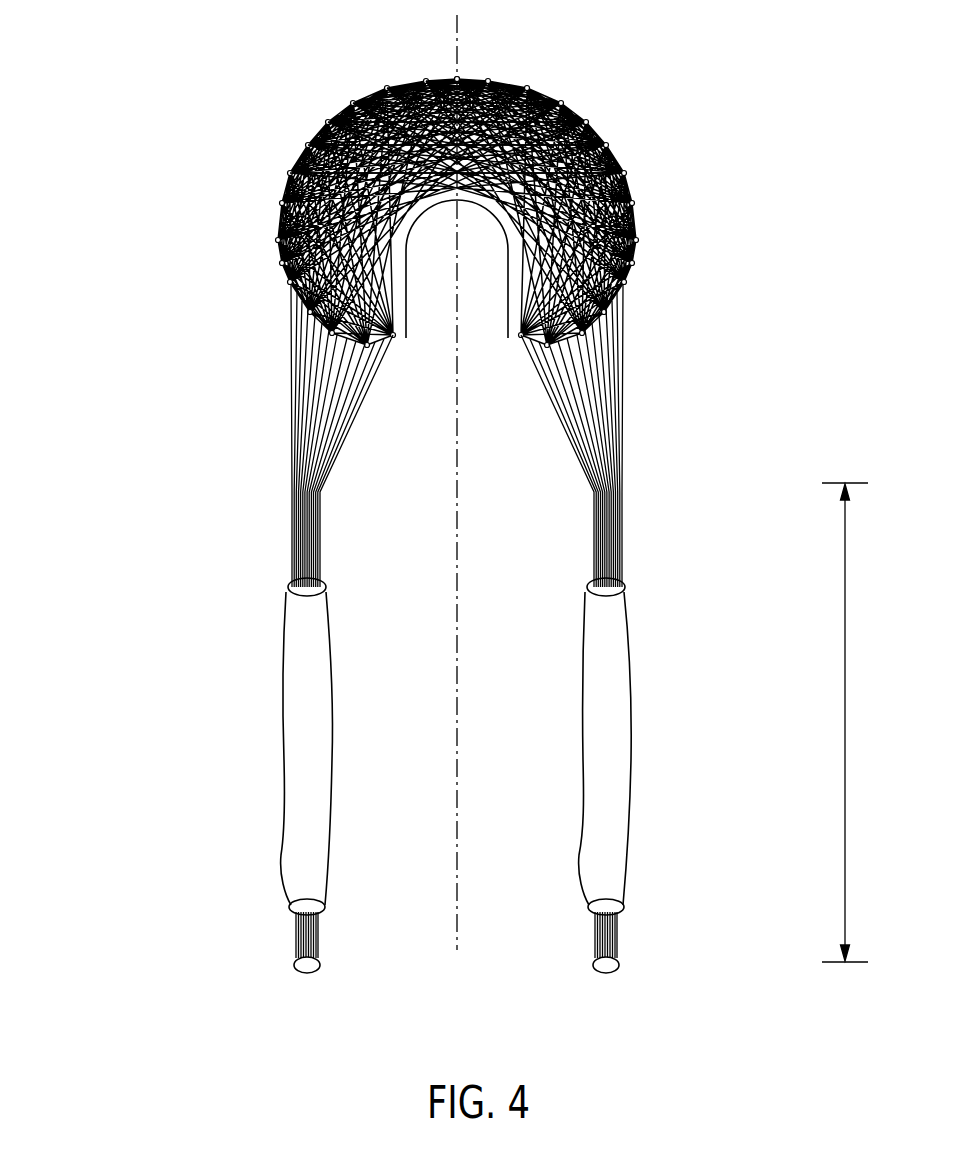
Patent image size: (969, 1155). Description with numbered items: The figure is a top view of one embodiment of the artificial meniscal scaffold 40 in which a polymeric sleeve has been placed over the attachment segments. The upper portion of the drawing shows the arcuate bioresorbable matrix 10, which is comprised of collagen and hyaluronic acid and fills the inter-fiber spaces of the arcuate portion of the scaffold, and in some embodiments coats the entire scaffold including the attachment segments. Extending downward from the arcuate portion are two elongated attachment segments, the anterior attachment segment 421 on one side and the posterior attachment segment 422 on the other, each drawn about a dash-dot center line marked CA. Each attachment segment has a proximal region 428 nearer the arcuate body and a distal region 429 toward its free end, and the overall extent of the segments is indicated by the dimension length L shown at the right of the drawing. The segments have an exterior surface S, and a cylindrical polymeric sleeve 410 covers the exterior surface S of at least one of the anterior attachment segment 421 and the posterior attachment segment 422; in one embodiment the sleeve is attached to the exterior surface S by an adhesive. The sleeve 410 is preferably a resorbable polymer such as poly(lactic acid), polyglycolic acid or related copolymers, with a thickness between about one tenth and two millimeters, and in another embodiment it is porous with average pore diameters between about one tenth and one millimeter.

The arcuate bioresorbable matrix 10 is at (453, 199).
The artificial meniscal scaffold 40 is at (371, 525).
The cylindrical polymeric sleeve 410 is at (308, 733).
The anterior attachment segment 421 is at (283, 629).
The posterior attachment segment 422 is at (565, 794).
The proximal region 428 is at (349, 533).
The distal region 429 is at (349, 777).
The exterior surface S is at (290, 923).
The length L is at (845, 698).
The central axis CA is at (458, 508).